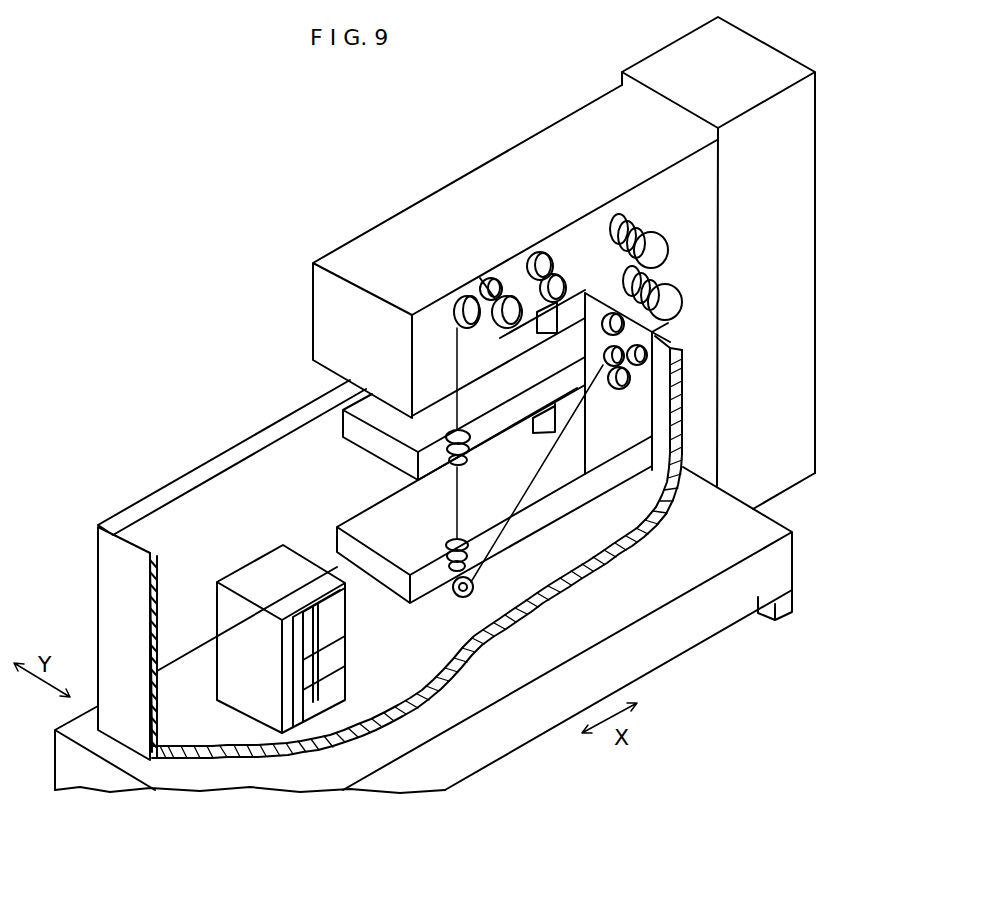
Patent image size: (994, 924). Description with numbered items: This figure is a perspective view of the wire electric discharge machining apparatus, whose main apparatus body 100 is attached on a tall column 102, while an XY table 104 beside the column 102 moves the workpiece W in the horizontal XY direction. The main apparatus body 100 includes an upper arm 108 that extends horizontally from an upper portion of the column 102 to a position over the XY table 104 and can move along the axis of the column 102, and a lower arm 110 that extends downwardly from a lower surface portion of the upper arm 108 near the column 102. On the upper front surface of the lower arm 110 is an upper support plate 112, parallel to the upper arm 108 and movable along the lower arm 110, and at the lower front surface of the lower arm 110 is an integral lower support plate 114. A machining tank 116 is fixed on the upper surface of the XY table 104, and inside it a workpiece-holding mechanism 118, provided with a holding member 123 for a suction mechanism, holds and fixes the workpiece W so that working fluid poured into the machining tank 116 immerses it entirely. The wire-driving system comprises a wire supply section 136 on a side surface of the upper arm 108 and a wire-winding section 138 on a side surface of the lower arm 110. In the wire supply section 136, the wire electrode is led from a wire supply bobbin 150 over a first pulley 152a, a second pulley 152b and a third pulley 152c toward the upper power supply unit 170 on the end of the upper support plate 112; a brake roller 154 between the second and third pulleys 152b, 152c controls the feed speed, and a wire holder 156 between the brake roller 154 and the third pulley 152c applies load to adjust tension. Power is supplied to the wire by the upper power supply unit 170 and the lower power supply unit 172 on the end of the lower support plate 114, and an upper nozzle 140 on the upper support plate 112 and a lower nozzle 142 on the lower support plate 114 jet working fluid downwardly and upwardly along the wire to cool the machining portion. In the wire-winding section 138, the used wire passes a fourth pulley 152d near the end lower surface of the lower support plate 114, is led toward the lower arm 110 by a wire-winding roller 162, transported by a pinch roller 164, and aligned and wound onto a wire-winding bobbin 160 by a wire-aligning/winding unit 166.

The main apparatus body 100 is at (425, 165).
The column 102 is at (806, 126).
The XY table 104 is at (783, 570).
The upper arm 108 is at (600, 112).
The lower arm 110 is at (644, 394).
The upper support plate 112 is at (382, 406).
The lower support plate 114 is at (568, 506).
The machining tank 116 is at (110, 584).
The workpiece-holding mechanism 118 is at (240, 688).
The holding member 123 is at (305, 680).
The wire supply section 136 is at (565, 246).
The wire-winding section 138 is at (684, 315).
The upper nozzle 140 is at (468, 450).
The lower nozzle 142 is at (474, 556).
The wire supply bobbin 150 is at (660, 242).
The first pulley 152a is at (567, 290).
The second pulley 152b is at (537, 241).
The third pulley 152c is at (455, 292).
The fourth pulley 152d is at (484, 636).
The brake roller 154 is at (504, 267).
The wire holder 156 is at (484, 279).
The wire-winding bobbin 160 is at (674, 297).
The wire-winding roller 162 is at (612, 390).
The pinch roller 164 is at (640, 428).
The wire-aligning/winding unit 166 is at (626, 328).
The upper power supply unit 170 is at (490, 414).
The lower power supply unit 172 is at (455, 578).
The workpiece W is at (350, 648).